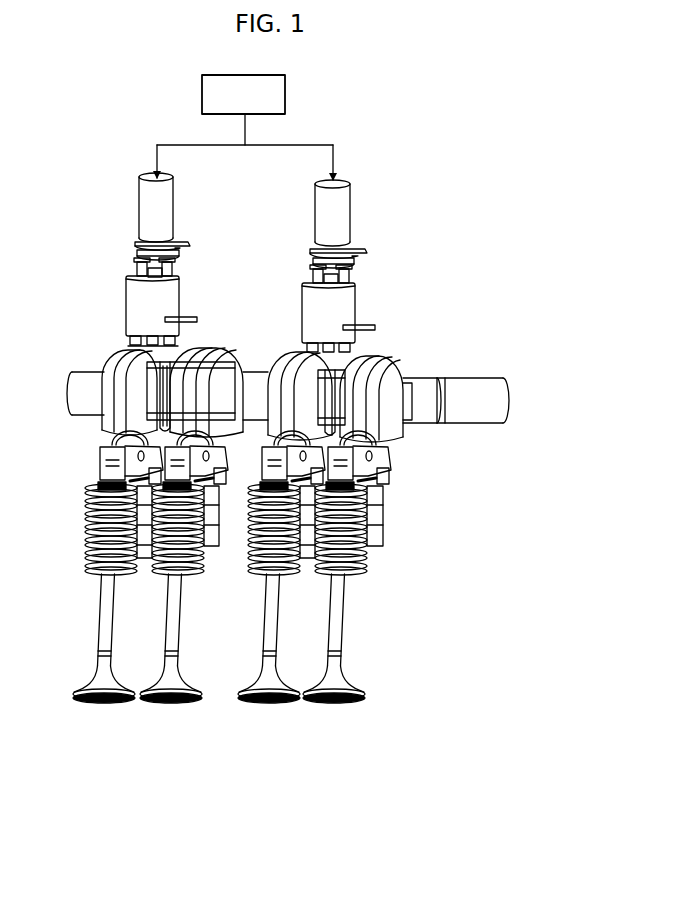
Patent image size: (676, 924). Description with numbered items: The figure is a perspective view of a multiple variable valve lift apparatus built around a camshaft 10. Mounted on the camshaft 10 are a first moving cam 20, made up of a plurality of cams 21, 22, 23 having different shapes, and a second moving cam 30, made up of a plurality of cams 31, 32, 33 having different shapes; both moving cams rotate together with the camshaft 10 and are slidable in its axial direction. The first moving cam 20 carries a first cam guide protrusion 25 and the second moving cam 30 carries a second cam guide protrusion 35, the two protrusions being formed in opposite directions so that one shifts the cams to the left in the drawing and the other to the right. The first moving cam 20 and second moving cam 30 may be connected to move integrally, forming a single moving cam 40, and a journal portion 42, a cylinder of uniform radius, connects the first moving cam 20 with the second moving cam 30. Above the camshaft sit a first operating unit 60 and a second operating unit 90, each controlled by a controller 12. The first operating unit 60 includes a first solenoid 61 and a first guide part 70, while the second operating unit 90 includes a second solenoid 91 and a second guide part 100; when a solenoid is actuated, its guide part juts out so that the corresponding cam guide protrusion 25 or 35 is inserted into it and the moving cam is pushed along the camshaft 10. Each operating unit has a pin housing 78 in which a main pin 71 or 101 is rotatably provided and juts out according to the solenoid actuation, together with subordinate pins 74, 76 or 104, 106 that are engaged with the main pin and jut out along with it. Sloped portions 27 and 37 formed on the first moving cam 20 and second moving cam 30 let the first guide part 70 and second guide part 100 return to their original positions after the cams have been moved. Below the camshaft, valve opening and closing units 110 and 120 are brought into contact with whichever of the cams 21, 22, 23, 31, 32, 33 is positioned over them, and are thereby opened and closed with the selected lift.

The camshaft 10 is at (476, 378).
The controller 12 is at (285, 93).
The first moving cam 20 is at (157, 343).
The cam 21 is at (210, 352).
The cam 22 is at (187, 352).
The cam 23 is at (176, 356).
The first cam guide protrusion 25 is at (163, 430).
The sloped portion 27 is at (150, 413).
The second moving cam 30 is at (345, 361).
The cam 31 is at (380, 362).
The cam 32 is at (358, 364).
The cam 33 is at (283, 362).
The second cam guide protrusion 35 is at (362, 452).
The sloped portion 37 is at (410, 362).
The moving cam 40 is at (262, 346).
The journal portion 42 is at (227, 458).
The first operating unit 60 is at (201, 264).
The first solenoid 61 is at (146, 208).
The first guide part 70 is at (181, 271).
The main pin 71 is at (140, 268).
The subordinate pin 74 is at (133, 347).
The subordinate pin 76 is at (133, 340).
The pin housing 78 is at (138, 308).
The second operating unit 90 is at (352, 267).
The second solenoid 91 is at (322, 212).
The second guide part 100 is at (354, 270).
The main pin 101 is at (310, 273).
The subordinate pin 104 is at (356, 328).
The subordinate pin 106 is at (326, 355).
The valve opening and closing unit 110 is at (155, 702).
The valve opening and closing unit 120 is at (320, 702).